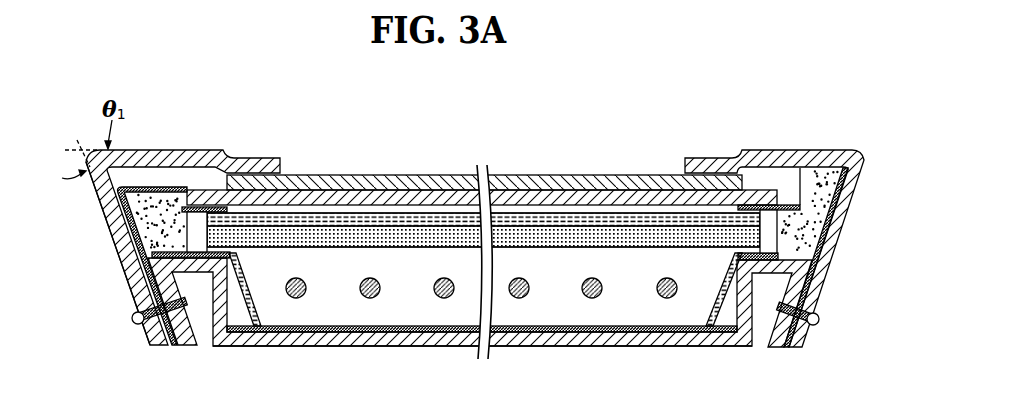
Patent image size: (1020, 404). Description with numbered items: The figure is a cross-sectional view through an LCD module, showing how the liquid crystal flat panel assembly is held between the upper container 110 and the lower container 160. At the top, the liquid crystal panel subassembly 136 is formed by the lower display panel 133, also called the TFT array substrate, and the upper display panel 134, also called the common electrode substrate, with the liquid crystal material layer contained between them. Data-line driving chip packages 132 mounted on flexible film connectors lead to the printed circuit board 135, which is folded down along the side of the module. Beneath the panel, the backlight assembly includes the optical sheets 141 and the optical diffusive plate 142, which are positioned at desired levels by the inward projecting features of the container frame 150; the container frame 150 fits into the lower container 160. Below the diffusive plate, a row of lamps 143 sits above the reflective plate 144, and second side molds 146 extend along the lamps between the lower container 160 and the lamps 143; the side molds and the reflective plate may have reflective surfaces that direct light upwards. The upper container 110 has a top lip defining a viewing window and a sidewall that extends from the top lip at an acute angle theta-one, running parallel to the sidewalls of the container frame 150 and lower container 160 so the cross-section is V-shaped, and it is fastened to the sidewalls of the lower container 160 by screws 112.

The upper container section 110 is at (228, 151).
The screw 112 is at (135, 316).
The data-line driving chip package 132 is at (157, 186).
The lower display panel 133 is at (548, 194).
The upper display panel 134 is at (504, 180).
The printed circuit board 135 is at (123, 276).
The liquid crystal panel subassembly 136 is at (482, 137).
The optical sheets 141 is at (765, 228).
The optical diffusive plate 142 is at (807, 269).
The lamp 143 is at (308, 293).
The reflective plate 144 is at (445, 333).
The second side mold 146 is at (243, 277).
The container frame 150 is at (150, 231).
The lower container section 160 is at (330, 337).